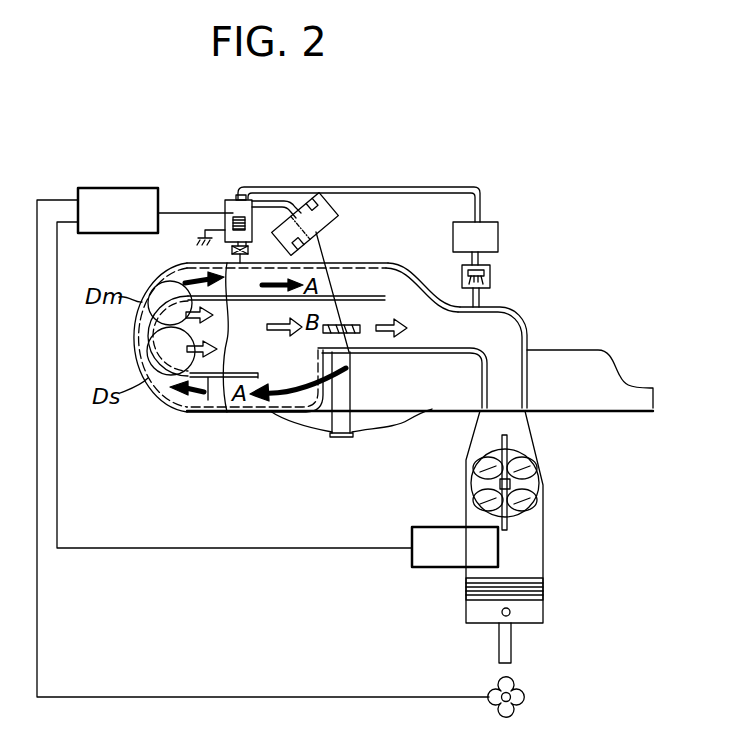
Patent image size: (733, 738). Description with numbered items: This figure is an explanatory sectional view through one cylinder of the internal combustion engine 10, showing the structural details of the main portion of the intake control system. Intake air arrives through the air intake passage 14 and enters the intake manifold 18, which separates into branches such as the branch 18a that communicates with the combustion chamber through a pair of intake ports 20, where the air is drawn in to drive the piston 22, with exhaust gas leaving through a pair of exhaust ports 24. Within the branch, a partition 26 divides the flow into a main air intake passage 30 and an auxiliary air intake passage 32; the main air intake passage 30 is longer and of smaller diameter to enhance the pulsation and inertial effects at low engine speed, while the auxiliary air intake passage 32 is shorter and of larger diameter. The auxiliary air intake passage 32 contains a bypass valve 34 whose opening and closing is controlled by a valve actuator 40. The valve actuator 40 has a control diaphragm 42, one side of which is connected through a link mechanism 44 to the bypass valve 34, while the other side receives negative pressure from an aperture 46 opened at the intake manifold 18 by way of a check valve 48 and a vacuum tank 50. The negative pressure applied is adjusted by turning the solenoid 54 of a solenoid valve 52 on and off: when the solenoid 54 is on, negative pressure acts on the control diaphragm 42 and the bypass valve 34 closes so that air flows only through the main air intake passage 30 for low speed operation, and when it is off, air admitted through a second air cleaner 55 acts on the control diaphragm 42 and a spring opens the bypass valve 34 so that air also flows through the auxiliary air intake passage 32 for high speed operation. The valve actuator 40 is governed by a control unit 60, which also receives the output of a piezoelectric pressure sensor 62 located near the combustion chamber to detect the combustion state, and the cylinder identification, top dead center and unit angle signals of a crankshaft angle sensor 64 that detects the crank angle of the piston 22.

The internal combustion engine 10 is at (560, 447).
The air intake passage 14 is at (562, 350).
The intake manifold 18 is at (518, 308).
The branch 18a is at (409, 270).
The intake ports 20 is at (498, 470).
The piston 22 is at (545, 582).
The exhaust ports 24 is at (528, 504).
The partition 26 is at (205, 412).
The main air intake passage 30 is at (227, 412).
The auxiliary air intake passage 32 is at (266, 358).
The bypass valve 34 is at (340, 356).
The valve actuator 40 is at (328, 166).
The control diaphragm 42 is at (336, 236).
The link mechanism 44 is at (358, 338).
The aperture 46 is at (477, 308).
The check valve 48 is at (491, 284).
The vacuum tank 50 is at (498, 240).
The solenoid valve 52 is at (229, 195).
The solenoid 54 is at (256, 255).
The second air cleaner 55 is at (232, 250).
The control unit 60 is at (115, 188).
The piezoelectric pressure sensor 62 is at (430, 527).
The crankshaft angle sensor 64 is at (520, 686).